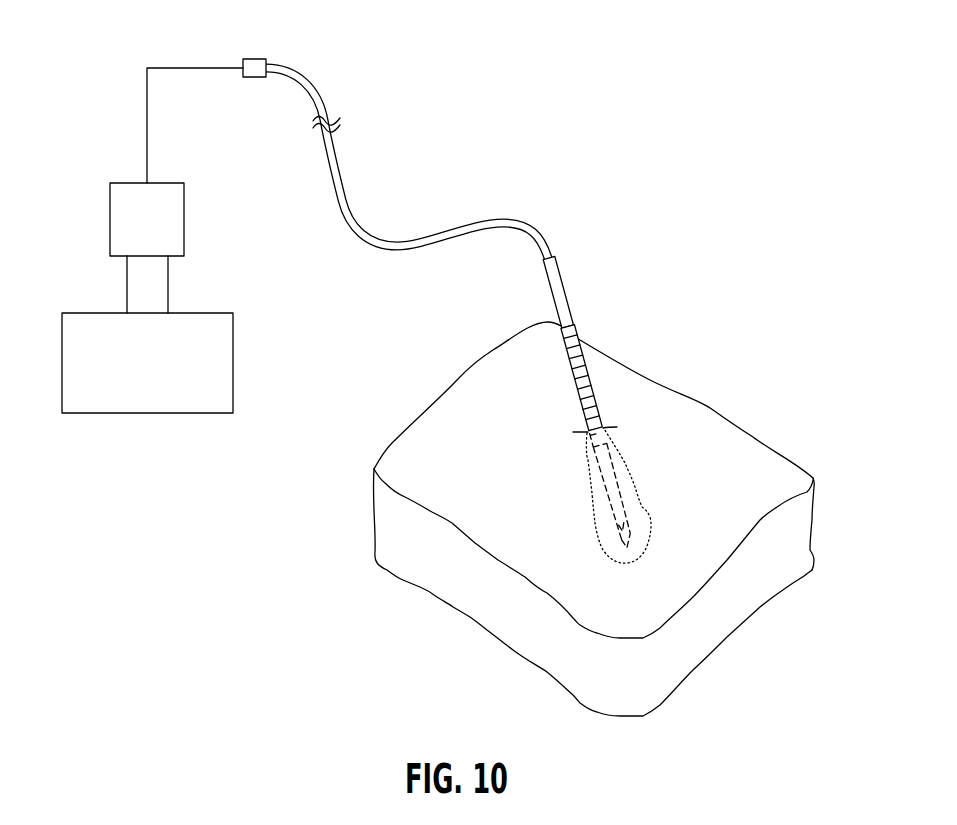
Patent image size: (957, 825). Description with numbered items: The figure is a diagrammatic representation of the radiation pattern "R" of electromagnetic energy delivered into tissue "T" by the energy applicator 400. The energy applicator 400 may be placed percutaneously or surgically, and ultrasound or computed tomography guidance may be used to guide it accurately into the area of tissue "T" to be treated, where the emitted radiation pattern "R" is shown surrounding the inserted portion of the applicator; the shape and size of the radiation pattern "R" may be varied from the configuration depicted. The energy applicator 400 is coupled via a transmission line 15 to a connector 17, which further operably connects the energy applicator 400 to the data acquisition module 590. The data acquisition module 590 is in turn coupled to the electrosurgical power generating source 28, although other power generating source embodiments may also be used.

The connector 17 is at (253, 59).
The transmission line 15 is at (338, 187).
The energy applicator 400 is at (604, 316).
The data acquisition module 590 is at (167, 232).
The electrosurgical power generating source 28 is at (160, 376).
The radiation pattern R is at (643, 508).
The tissue T is at (737, 598).